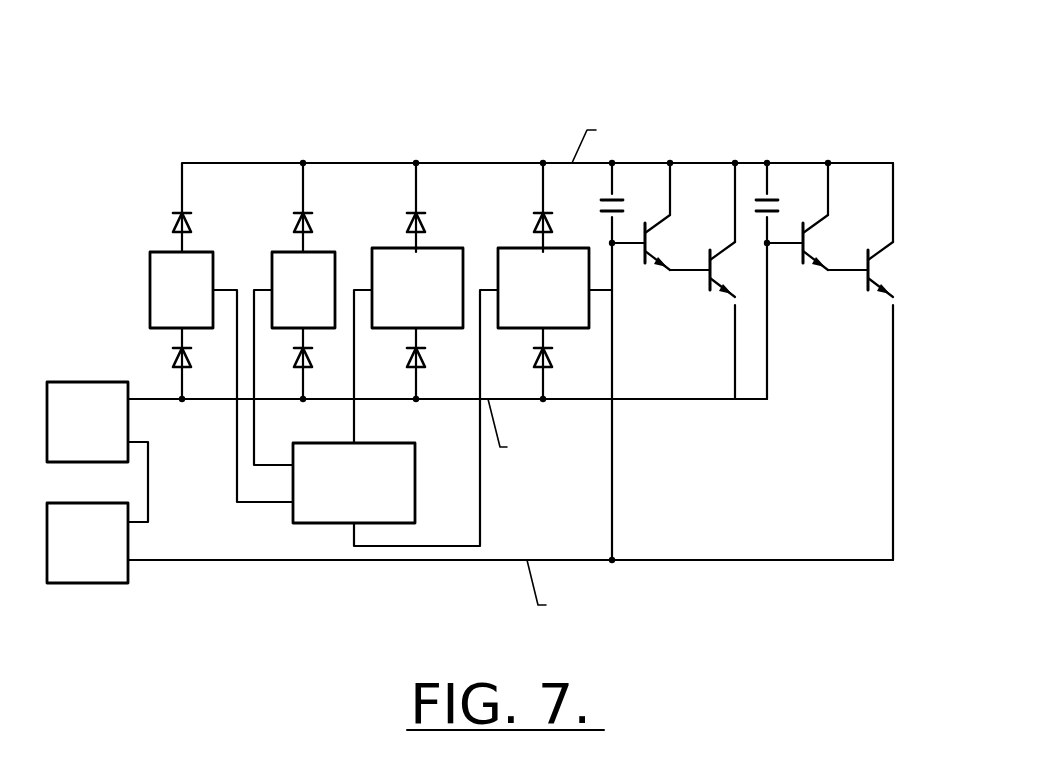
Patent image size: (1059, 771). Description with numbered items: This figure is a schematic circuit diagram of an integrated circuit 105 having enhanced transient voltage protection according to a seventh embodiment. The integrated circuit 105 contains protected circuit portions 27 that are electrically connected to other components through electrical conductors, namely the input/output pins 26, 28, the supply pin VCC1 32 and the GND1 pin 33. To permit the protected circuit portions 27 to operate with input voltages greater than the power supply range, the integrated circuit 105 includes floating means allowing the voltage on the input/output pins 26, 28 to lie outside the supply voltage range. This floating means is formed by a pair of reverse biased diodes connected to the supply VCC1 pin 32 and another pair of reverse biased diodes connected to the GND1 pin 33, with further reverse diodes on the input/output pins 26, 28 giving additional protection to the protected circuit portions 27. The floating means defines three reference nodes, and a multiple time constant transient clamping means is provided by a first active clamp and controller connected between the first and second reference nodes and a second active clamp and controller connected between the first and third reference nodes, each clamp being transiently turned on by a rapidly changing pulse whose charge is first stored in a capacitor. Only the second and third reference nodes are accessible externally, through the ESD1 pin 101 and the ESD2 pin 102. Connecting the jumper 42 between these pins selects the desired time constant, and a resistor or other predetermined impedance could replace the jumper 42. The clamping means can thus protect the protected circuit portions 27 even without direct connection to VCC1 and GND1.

The integrated circuit 105 is at (517, 318).
The input/output pin 28 is at (195, 267).
The input/output pin 26 is at (315, 267).
The supply pin VCC1 32 is at (432, 267).
The GND1 pin 33 is at (550, 312).
The protected circuit portions 27 is at (363, 465).
The ESD1 pin 101 is at (91, 385).
The ESD2 pin 102 is at (92, 579).
The jumper 42 is at (172, 490).